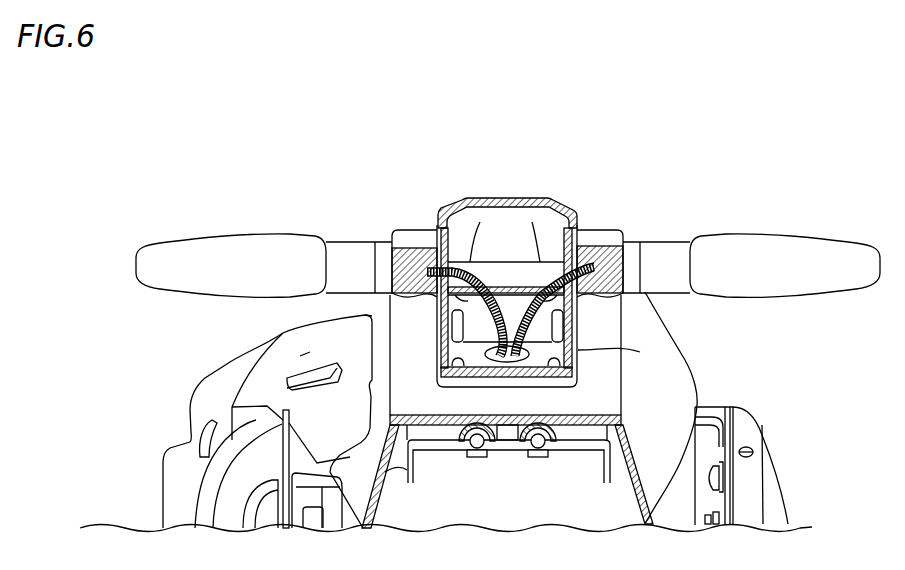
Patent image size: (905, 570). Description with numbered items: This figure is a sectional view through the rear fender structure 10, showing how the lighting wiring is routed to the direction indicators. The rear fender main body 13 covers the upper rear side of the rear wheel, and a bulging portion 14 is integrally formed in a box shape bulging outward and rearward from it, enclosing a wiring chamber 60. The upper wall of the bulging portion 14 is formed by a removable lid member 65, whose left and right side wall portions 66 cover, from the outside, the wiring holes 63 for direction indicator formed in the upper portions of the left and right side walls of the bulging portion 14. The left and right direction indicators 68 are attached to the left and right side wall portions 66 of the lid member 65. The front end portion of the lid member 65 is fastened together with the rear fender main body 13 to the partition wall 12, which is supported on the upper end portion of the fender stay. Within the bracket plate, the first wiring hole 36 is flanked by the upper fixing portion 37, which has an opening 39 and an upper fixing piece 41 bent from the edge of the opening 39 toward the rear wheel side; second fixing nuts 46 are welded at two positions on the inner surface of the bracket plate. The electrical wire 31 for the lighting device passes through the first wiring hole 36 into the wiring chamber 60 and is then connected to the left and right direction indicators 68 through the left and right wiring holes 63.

The rear fender structure 10 is at (527, 240).
The partition wall 12 is at (532, 272).
The rear fender main body 13 is at (603, 255).
The bulging portion 14 is at (578, 377).
The electrical wire for the lighting device 31 is at (455, 225).
The first wiring hole 36 is at (640, 352).
The upper fixing portion 37 is at (209, 303).
The opening 39 is at (470, 327).
The upper fixing piece 41 is at (475, 313).
The second fixing nuts 46 is at (537, 457).
The wiring chamber 60 is at (508, 306).
The wiring holes for direction indicator 63 is at (418, 250).
The lid member 65 is at (480, 199).
The left and right side wall portions 66 is at (590, 226).
The left and right direction indicators 68 is at (242, 243).